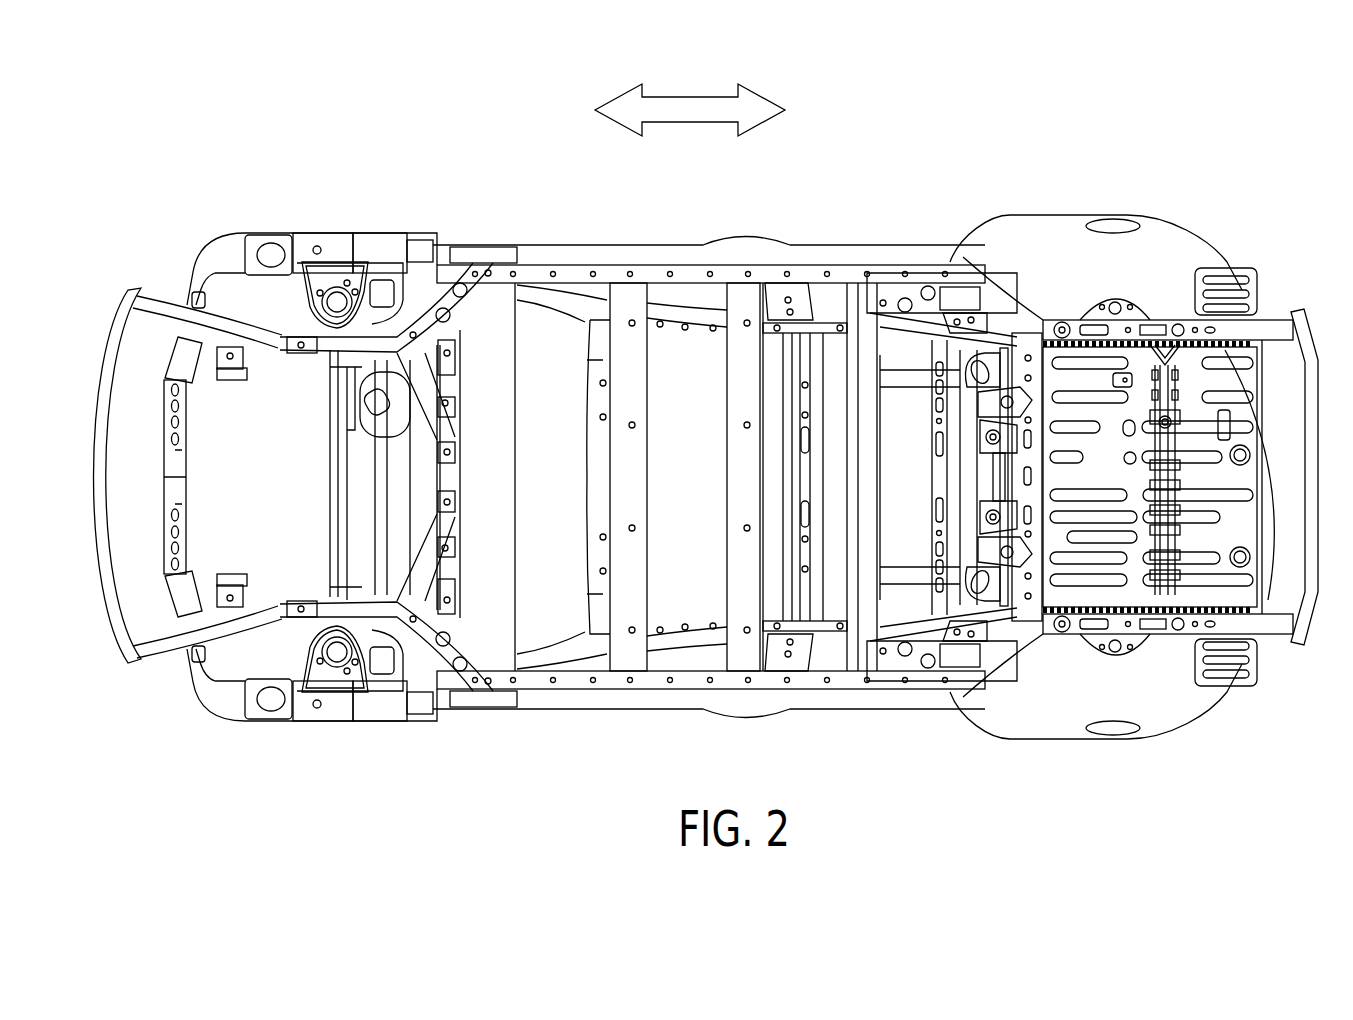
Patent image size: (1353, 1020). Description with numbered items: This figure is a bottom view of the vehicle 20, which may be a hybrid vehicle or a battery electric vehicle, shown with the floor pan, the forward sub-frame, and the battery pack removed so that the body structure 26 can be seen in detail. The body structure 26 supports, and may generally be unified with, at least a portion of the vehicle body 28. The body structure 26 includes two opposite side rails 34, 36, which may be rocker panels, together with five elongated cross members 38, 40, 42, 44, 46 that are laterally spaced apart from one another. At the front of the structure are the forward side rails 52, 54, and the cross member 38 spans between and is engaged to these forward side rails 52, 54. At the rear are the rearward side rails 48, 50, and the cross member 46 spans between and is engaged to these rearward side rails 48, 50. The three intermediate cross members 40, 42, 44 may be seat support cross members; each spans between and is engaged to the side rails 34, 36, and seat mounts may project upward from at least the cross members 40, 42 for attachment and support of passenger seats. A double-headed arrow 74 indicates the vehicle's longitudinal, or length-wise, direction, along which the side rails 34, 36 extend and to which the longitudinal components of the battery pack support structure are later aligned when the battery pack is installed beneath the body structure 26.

The vehicle 20 is at (1238, 200).
The body structure 26 is at (170, 650).
The vehicle body 28 is at (828, 242).
The side rail 34 is at (528, 257).
The side rail 36 is at (572, 700).
The cross member 38 is at (417, 489).
The cross member 40 is at (610, 455).
The cross member 42 is at (725, 452).
The cross member 44 is at (855, 498).
The cross member 46 is at (985, 493).
The rearward side rail 48 is at (1130, 297).
The rearward side rail 50 is at (1125, 640).
The forward side rail 52 is at (280, 355).
The forward side rail 54 is at (280, 600).
The longitudinal direction arrow 74 is at (688, 97).